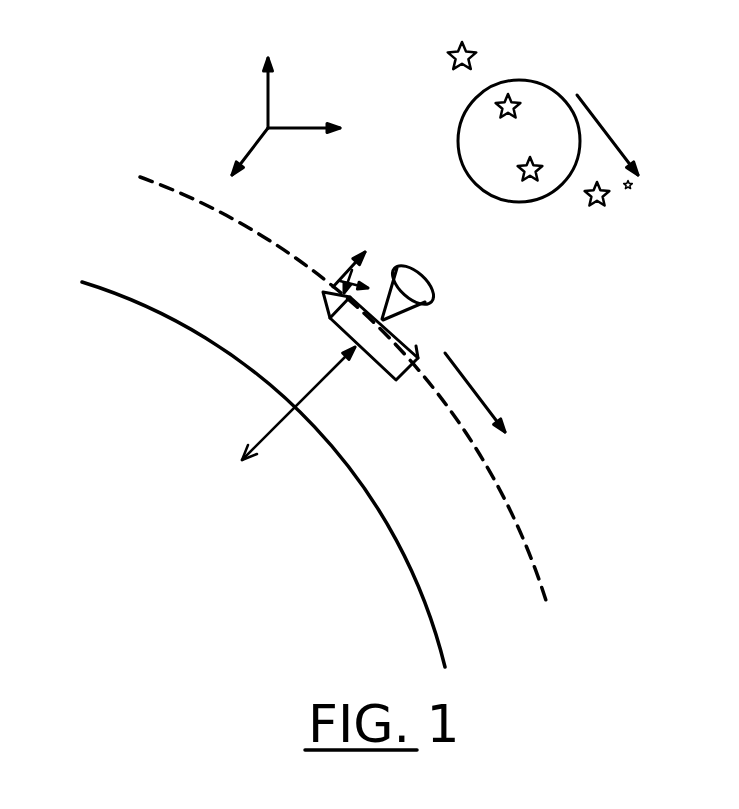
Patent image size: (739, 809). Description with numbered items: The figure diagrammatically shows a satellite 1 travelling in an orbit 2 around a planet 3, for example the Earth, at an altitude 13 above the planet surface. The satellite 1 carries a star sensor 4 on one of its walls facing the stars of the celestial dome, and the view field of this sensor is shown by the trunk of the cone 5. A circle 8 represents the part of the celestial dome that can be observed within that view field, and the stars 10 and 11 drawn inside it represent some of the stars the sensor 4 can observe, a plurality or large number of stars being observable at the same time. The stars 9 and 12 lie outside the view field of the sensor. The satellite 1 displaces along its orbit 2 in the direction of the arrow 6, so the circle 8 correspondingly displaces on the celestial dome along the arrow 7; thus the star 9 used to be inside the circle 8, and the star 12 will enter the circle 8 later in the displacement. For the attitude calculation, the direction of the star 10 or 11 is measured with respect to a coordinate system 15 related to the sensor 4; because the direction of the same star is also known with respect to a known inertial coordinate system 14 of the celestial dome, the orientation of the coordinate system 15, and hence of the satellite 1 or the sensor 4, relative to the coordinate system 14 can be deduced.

The satellite 1 is at (383, 347).
The orbit 2 is at (198, 197).
The planet 3 is at (100, 328).
The star sensor 4 is at (382, 316).
The trunk of the cone 5 is at (432, 315).
The arrow 6 is at (475, 391).
The arrow 7 is at (607, 131).
The circle 8 is at (543, 103).
The star 9 is at (457, 70).
The star 10 is at (503, 115).
The star 11 is at (523, 180).
The star 12 is at (607, 197).
The altitude 13 is at (313, 387).
The inertial coordinate system 14 is at (270, 97).
The coordinate system 15 is at (351, 265).